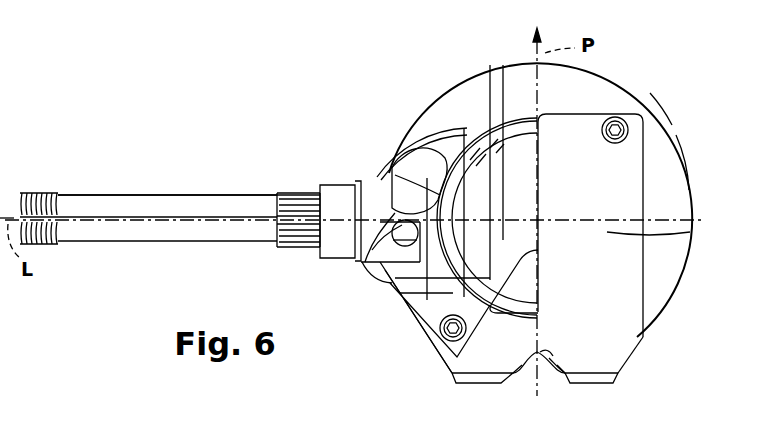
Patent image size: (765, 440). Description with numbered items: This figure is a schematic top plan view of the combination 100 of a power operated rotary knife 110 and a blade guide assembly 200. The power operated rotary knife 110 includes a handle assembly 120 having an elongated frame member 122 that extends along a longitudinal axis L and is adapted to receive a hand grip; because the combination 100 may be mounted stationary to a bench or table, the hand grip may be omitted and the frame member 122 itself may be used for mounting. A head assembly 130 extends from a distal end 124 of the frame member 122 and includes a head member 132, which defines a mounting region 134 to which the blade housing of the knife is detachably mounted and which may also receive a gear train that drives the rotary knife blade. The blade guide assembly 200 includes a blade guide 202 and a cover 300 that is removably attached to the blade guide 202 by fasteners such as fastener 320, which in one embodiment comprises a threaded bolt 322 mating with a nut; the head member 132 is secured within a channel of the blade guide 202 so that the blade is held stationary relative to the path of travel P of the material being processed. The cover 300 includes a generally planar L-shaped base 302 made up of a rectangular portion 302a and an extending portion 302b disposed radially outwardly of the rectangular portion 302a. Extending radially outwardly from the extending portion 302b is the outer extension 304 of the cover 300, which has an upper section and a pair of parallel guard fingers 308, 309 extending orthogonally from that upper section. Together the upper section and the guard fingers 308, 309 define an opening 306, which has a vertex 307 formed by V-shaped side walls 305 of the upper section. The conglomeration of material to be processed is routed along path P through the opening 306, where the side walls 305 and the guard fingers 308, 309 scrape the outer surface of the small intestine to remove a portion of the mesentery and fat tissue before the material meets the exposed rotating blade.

The combination 100 is at (625, 72).
The power operated rotary knife 110 is at (302, 180).
The handle assembly 120 is at (288, 254).
The frame member 122 is at (173, 247).
The distal end 124 is at (354, 187).
The head assembly 130 is at (383, 194).
The head member 132 is at (369, 262).
The mounting region 134 is at (455, 214).
The blade guide assembly 200 is at (668, 118).
The blade guide 202 is at (686, 164).
The cover 300 is at (625, 204).
The base 302 is at (612, 252).
The rectangular portion 302a is at (674, 246).
The extending portion 302b is at (442, 360).
The outer extension 304 is at (567, 365).
The side walls 305 is at (512, 373).
The opening 306 is at (528, 368).
The vertex 307 is at (552, 362).
The guard finger 308 is at (466, 389).
The guard finger 309 is at (602, 388).
The fastener 320 is at (630, 115).
The threaded bolt 322 is at (441, 327).